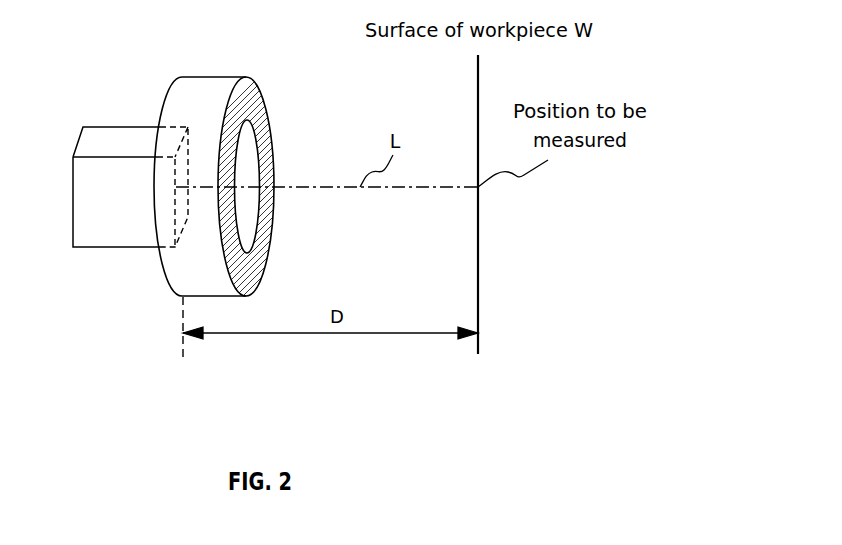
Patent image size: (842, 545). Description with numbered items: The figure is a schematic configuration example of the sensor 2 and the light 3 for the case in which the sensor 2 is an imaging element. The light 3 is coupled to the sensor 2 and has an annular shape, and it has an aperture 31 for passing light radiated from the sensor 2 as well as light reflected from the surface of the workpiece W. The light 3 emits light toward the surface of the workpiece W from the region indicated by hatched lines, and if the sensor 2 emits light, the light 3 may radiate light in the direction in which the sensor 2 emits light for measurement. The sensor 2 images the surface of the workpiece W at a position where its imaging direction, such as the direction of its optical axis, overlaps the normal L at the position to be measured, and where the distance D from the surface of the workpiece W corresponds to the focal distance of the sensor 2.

The sensor 2 is at (100, 127).
The light 3 is at (198, 77).
The aperture 31 is at (245, 157).